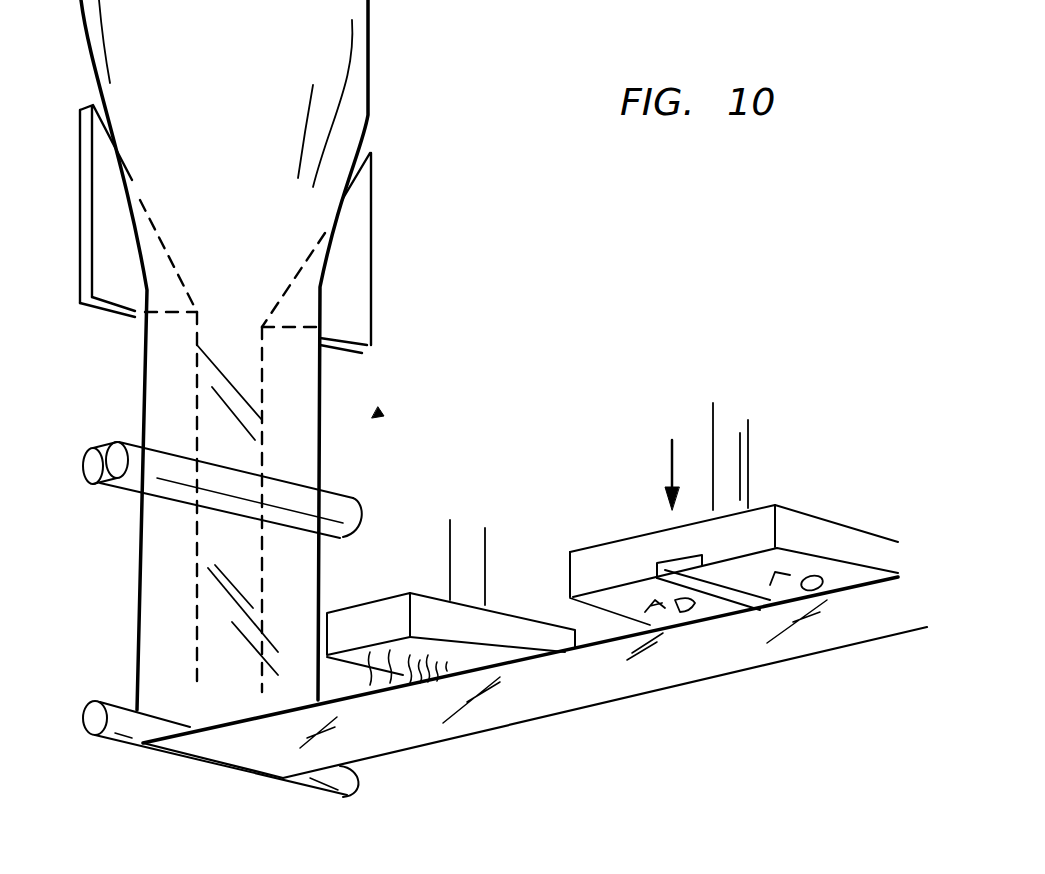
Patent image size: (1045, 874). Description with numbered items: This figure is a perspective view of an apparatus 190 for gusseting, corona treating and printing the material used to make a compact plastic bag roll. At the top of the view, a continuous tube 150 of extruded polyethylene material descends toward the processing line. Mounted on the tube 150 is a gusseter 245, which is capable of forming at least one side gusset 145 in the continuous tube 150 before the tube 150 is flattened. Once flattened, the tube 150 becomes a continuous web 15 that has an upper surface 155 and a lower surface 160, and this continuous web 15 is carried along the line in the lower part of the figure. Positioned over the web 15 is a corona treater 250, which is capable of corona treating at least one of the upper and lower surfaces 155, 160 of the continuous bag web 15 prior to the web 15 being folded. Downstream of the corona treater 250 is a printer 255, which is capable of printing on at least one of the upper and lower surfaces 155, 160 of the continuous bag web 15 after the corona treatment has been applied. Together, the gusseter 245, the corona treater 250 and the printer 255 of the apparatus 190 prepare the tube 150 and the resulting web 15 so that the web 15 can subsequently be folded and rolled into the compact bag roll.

The continuous web 15 is at (153, 585).
The side gusset 145 is at (307, 396).
The tube 150 is at (307, 463).
The upper surface 155 is at (597, 645).
The lower surface 160 is at (617, 668).
The apparatus 190 is at (378, 412).
The gusseter 245 is at (358, 255).
The corona treater 250 is at (376, 613).
The printer 255 is at (812, 535).